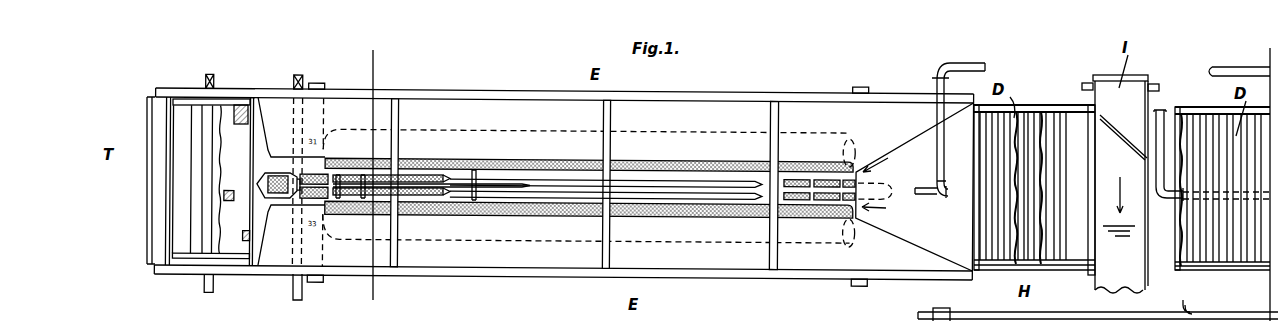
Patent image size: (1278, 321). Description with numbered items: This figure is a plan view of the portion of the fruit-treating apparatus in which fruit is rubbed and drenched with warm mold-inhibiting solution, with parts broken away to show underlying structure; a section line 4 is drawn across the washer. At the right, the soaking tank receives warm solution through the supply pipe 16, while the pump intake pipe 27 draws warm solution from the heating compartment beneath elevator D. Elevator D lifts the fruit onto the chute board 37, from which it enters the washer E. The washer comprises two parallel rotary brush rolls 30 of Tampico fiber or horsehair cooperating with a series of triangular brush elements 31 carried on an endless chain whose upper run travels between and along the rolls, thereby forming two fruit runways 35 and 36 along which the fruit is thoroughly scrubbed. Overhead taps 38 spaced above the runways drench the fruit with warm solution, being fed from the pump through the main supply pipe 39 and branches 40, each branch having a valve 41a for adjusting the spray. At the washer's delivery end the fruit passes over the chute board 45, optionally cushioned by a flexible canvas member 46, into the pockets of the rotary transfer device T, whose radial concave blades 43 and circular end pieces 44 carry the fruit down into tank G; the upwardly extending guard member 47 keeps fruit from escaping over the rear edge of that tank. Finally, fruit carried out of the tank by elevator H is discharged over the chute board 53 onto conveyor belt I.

The section line 4- 4 is at (382, 174).
The supply pipe 16 is at (1228, 71).
The pump intake pipe 27 is at (1163, 117).
The rotary brush rolls 30 is at (358, 200).
The brush elements 31 is at (407, 190).
The fruit runway 35 is at (886, 163).
The fruit runway 36 is at (880, 214).
The chute board 37 is at (907, 186).
The taps 38 is at (483, 181).
The main supply pipe 39 is at (987, 67).
The branches 40 is at (473, 198).
The branch valve 41a is at (325, 318).
The blades 43 is at (200, 220).
The circular pieces 44 is at (186, 101).
The chute board 45 is at (259, 115).
The flexible member 46 is at (236, 110).
The guard member 47 is at (152, 194).
The chute board 53 is at (1077, 124).